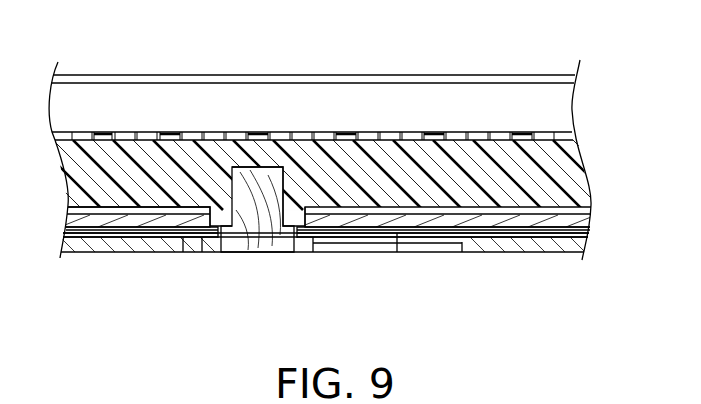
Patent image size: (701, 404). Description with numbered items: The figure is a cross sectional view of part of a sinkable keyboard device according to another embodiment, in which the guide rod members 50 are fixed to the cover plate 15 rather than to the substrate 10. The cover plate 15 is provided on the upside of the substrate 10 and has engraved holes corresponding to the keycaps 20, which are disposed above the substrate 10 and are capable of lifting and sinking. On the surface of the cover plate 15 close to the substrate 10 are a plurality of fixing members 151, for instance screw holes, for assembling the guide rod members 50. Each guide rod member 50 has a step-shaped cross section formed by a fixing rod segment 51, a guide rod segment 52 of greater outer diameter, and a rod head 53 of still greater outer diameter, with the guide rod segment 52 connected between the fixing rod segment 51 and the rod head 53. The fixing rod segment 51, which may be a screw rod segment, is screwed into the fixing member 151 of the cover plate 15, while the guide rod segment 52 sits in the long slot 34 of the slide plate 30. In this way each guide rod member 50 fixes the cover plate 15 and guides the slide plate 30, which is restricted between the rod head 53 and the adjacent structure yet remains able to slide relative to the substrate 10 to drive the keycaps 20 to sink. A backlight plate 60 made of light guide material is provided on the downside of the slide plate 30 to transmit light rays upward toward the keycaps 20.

The keycap 20 is at (93, 88).
The cover plate 15 is at (248, 155).
The fixing member 151 is at (302, 205).
The substrate 10 is at (385, 215).
The guide rod member 50 is at (326, 263).
The fixing rod segment 51 is at (266, 218).
The guide rod segment 52 is at (228, 243).
The rod head 53 is at (440, 269).
The slide plate 30 is at (482, 236).
The long slot 34 is at (428, 243).
The backlight plate 60 is at (522, 246).